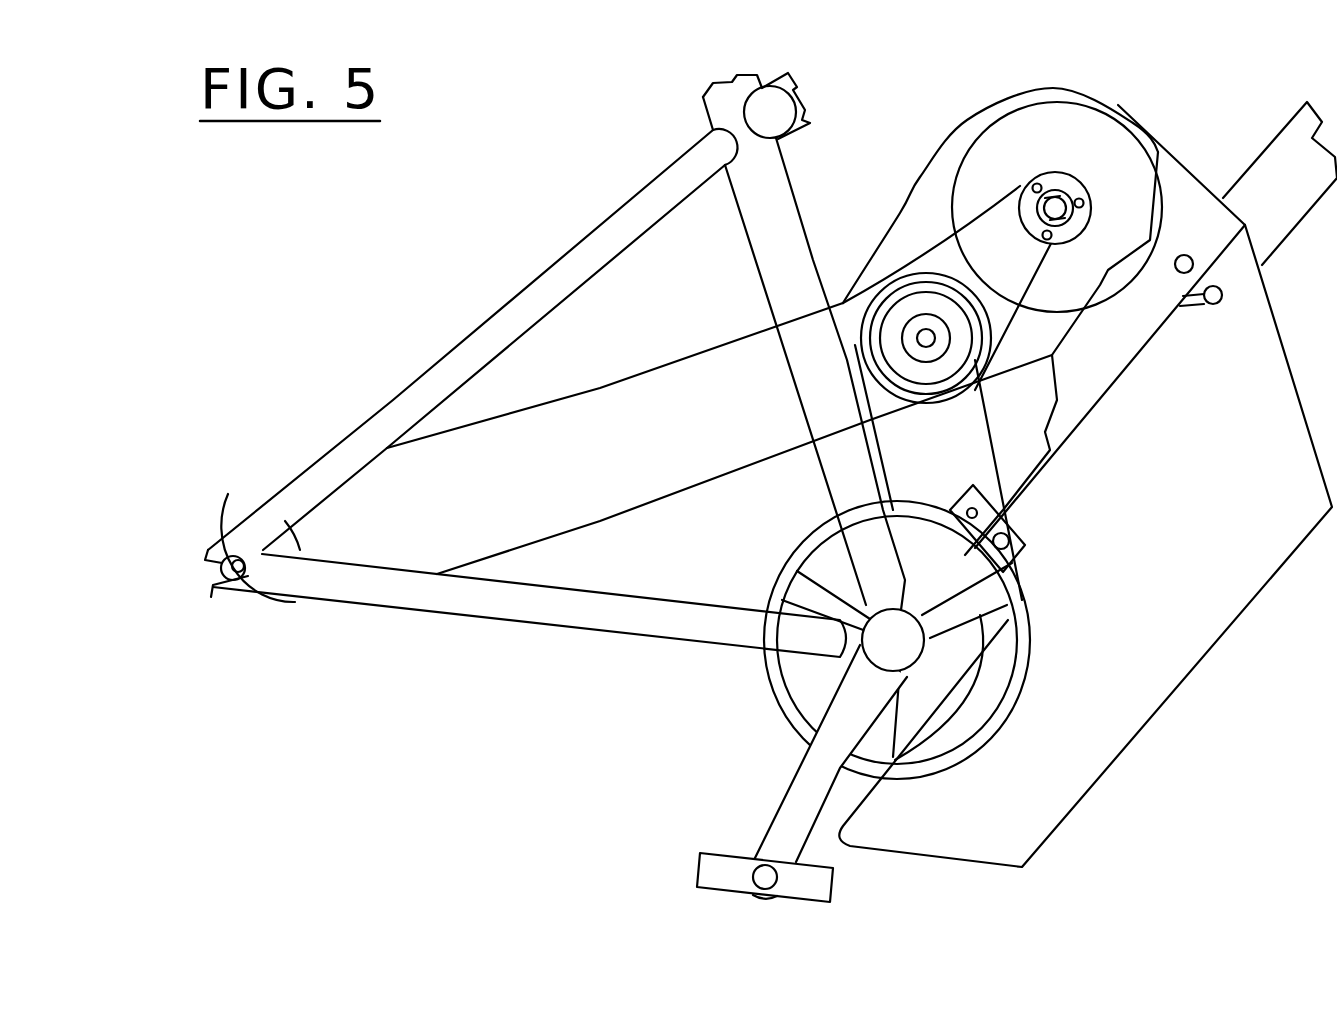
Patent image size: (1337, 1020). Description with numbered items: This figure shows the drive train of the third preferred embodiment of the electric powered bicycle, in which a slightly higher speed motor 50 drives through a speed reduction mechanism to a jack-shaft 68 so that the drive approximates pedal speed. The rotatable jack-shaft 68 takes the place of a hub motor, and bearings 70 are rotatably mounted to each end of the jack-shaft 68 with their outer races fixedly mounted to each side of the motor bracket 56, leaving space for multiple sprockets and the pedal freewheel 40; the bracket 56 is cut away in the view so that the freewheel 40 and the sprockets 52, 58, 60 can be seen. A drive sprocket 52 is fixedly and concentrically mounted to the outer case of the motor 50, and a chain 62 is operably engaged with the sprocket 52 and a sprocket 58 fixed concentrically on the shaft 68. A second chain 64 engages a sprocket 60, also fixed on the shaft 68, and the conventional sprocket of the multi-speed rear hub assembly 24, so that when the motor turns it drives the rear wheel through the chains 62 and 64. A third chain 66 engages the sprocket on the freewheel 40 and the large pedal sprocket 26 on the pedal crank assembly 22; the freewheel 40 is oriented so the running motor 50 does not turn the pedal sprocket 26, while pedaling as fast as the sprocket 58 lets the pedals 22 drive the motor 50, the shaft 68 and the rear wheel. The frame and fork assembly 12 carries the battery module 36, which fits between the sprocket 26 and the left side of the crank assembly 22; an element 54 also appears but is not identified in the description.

The frame and fork assembly 12 is at (645, 205).
The pedal crank assembly 22 is at (790, 828).
The multi-speed rear hub assembly 24 is at (218, 620).
The pedal sprocket 26 is at (775, 683).
The battery module 36 is at (1173, 477).
The pedal freewheel 40 is at (928, 307).
The motor 50 is at (1017, 140).
The drive sprocket 52 is at (1048, 178).
The shaft 54 is at (1065, 190).
The motor bracket 56 is at (1180, 198).
The sprocket 58 is at (870, 350).
The sprocket 60 is at (892, 314).
The chain 62 is at (1017, 142).
The chain 64 is at (677, 358).
The chain 66 is at (800, 522).
The jack-shaft 68 is at (926, 345).
The bearings 70 is at (942, 348).